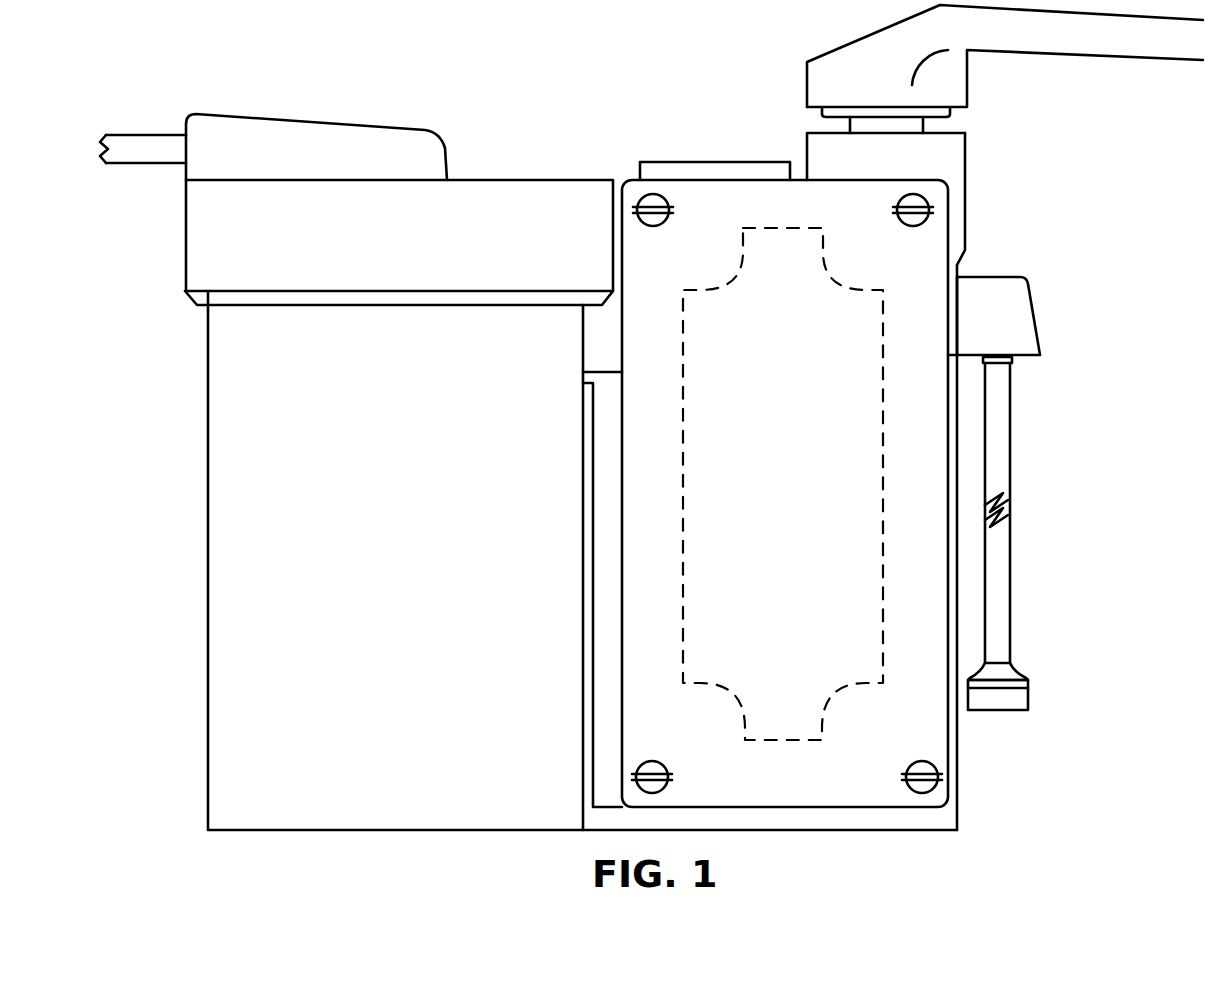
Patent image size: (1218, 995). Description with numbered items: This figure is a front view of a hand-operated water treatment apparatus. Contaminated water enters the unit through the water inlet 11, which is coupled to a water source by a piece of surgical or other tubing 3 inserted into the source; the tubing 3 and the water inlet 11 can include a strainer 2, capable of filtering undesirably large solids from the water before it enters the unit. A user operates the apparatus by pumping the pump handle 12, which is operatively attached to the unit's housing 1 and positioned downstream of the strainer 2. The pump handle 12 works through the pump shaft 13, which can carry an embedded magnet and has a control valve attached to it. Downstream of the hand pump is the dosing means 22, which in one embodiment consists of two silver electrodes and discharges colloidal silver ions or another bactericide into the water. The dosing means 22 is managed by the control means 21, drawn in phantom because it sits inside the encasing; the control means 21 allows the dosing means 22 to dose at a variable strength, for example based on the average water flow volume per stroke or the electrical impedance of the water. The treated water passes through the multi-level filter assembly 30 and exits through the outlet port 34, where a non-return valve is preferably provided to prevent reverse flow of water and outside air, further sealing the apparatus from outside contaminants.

The housing 1 is at (950, 796).
The strainer 2 is at (1020, 676).
The tubing 3 is at (995, 553).
The water inlet 11 is at (1030, 330).
The pump handle 12 is at (942, 80).
The pump shaft 13 is at (843, 127).
The control means 21 is at (740, 227).
The dosing means 22 is at (652, 167).
The multi-level filter assembly 30 is at (280, 450).
The outlet port 34 is at (163, 133).